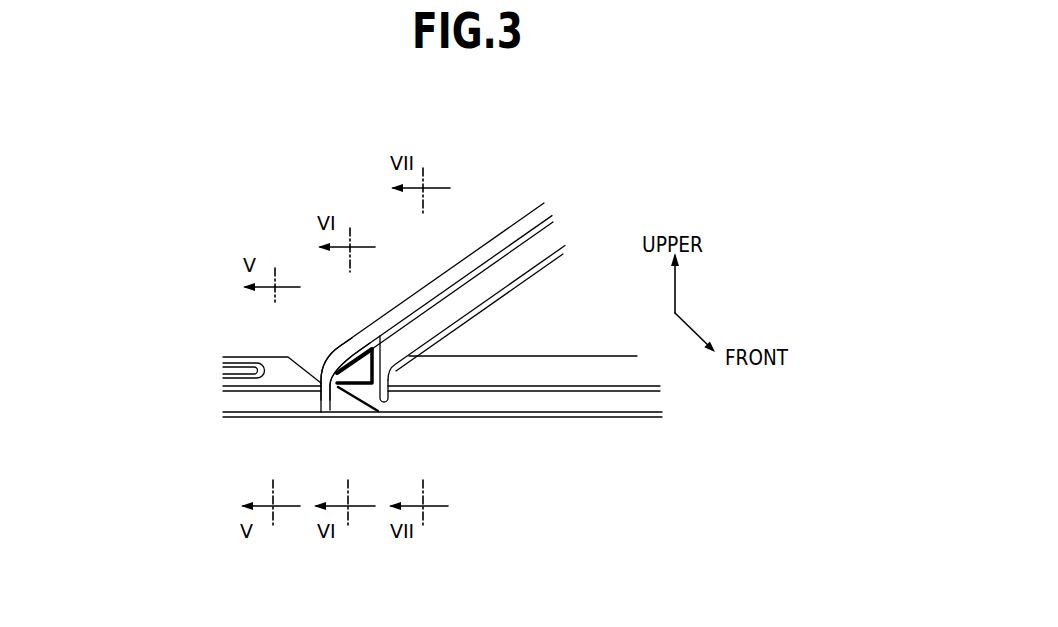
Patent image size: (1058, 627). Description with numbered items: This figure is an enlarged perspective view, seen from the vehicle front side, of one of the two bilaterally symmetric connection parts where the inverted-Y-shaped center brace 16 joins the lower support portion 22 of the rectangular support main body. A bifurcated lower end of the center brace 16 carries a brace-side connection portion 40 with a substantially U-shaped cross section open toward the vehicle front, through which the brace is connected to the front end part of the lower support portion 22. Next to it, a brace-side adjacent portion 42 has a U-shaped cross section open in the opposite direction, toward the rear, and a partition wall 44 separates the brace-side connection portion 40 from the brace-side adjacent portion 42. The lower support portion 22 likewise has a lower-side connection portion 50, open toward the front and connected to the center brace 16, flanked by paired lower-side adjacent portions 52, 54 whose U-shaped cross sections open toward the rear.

The center brace 16 is at (493, 204).
The lower support portion 22 is at (562, 441).
The brace-side connection portion 40 is at (348, 350).
The brace-side adjacent portion 42 is at (399, 342).
The partition wall 44 is at (381, 343).
The lower-side connection portion 50 is at (341, 401).
The lower-side adjacent portion 52 is at (283, 401).
The lower-side adjacent portion 54 is at (417, 401).